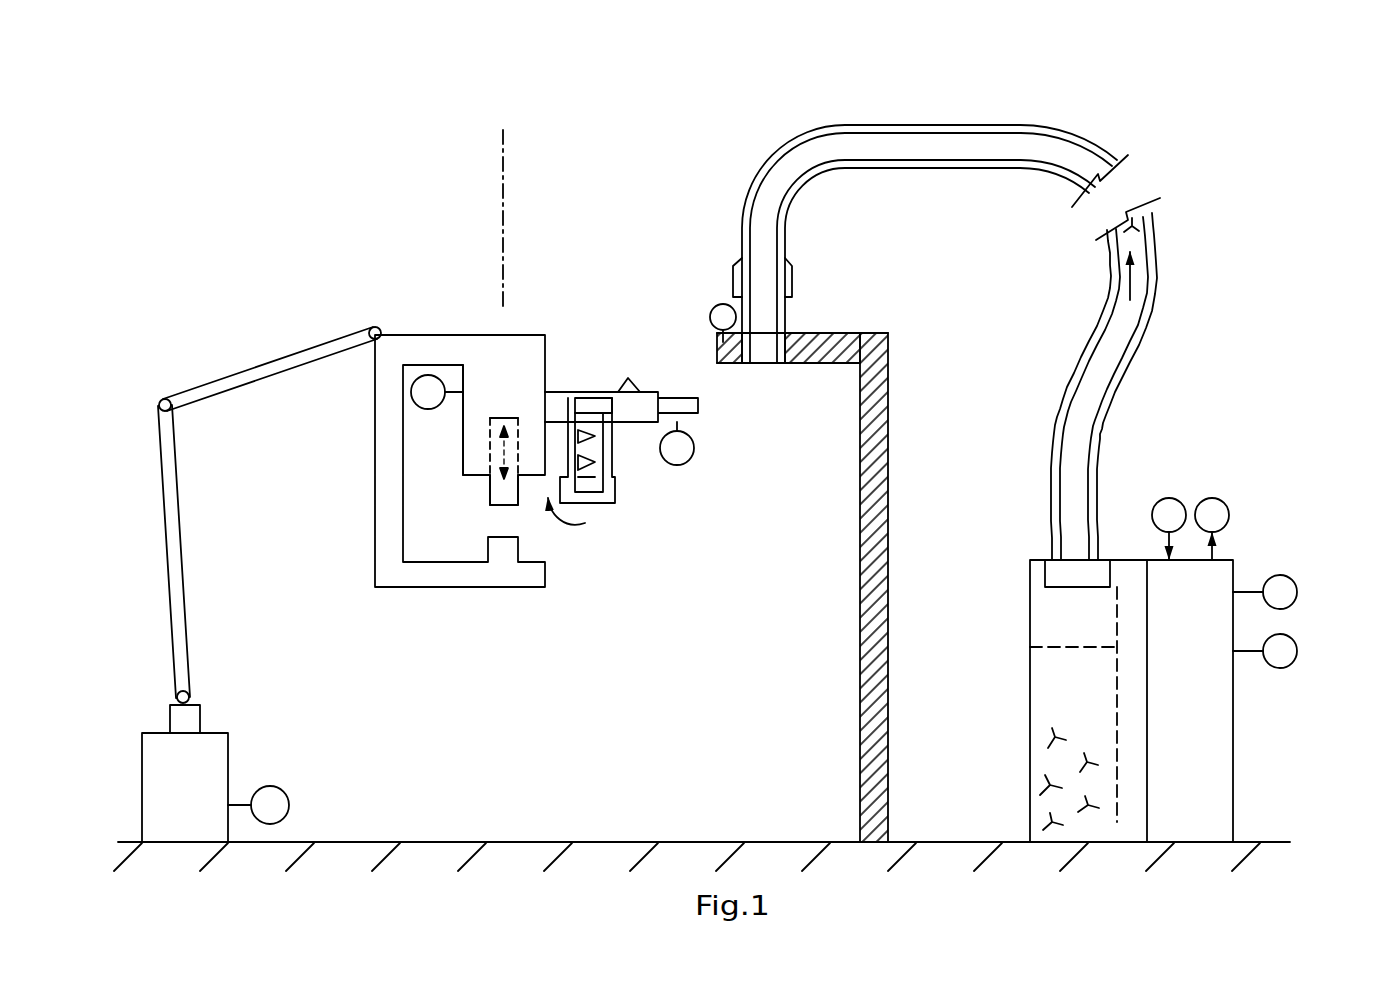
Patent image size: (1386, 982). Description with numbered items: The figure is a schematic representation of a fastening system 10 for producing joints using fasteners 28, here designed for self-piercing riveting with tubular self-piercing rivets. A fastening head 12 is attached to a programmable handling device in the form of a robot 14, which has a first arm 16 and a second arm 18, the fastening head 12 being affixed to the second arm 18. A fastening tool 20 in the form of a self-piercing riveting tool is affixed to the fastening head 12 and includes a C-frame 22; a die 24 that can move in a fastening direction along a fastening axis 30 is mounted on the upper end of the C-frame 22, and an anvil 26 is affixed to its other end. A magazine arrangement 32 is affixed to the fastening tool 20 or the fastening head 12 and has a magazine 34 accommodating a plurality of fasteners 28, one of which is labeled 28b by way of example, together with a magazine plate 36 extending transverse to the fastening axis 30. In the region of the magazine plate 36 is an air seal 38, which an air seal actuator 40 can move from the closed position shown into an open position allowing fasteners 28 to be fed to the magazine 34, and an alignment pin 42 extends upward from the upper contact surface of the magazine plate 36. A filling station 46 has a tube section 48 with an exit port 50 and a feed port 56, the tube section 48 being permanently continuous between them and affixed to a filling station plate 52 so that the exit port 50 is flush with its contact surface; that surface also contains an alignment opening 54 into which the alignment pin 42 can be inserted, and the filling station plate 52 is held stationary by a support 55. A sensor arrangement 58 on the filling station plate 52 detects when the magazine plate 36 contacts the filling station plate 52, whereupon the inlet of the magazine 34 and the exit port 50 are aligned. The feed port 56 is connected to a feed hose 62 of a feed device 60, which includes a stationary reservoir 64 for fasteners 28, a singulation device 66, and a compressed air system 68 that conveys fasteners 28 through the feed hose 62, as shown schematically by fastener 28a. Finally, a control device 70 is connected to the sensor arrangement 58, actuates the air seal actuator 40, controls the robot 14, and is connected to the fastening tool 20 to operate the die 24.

The fastening system 10 is at (1206, 118).
The fastening head 12 is at (488, 334).
The robot 14 is at (230, 760).
The first arm 16 is at (178, 598).
The second arm 18 is at (200, 385).
The fastening tool 20 is at (518, 340).
The C-frame 22 is at (415, 342).
The die 24 is at (495, 493).
The anvil 26 is at (493, 547).
The fasteners 28 is at (1050, 822).
The fastener being conveyed 28a is at (1138, 220).
The fastener in magazine 28b is at (603, 448).
The fastening axis 30 is at (503, 168).
The magazine arrangement 32 is at (612, 314).
The magazine 34 is at (610, 460).
The magazine plate 36 is at (661, 398).
The air seal 38 is at (602, 403).
The air seal actuator 40 is at (700, 408).
The alignment pin 42 is at (630, 378).
The filling station 46 is at (870, 305).
The tube section 48 is at (783, 318).
The exit port 50 is at (765, 363).
The filling station plate 52 is at (843, 333).
The alignment opening 54 is at (813, 347).
The support 55 is at (878, 718).
The feed port 56 is at (757, 293).
The sensor arrangement 58 is at (727, 363).
The feed device 60 is at (980, 122).
The feed hose 62 is at (1022, 152).
The reservoir 64 is at (1048, 683).
The singulation device 66 is at (1055, 612).
The compressed air system 68 is at (1045, 573).
The control device 70 is at (1192, 748).